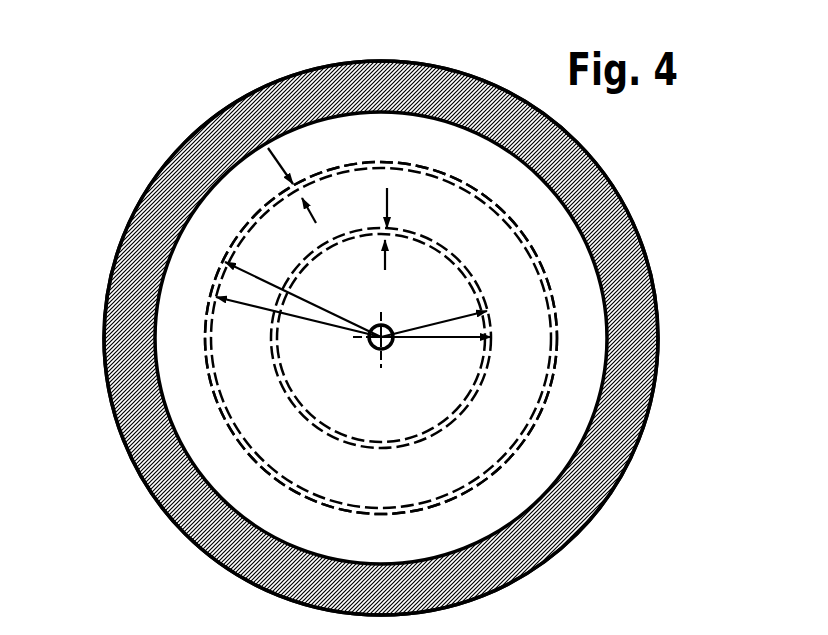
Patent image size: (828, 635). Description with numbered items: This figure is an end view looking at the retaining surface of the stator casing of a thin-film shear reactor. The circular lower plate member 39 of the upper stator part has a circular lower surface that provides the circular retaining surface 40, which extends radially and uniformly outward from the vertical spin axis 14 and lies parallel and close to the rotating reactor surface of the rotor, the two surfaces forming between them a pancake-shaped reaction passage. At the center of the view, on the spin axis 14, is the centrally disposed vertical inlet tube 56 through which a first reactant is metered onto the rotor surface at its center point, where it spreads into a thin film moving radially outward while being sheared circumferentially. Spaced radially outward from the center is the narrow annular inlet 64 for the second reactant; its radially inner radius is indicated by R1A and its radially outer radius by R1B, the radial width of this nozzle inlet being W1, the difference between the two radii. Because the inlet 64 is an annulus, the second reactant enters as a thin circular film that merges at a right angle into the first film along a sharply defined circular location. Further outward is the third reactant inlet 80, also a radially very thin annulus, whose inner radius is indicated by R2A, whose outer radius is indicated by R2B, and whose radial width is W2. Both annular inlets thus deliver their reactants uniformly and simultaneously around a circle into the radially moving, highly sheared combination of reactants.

The vertical spin axis 14 is at (370, 355).
The circular lower plate member 39 is at (583, 495).
The circular retaining surface 40 is at (457, 227).
The centrally disposed vertical inlet tube 56 is at (371, 352).
The narrow annular inlet 64 is at (365, 446).
The third reactant inlet 80 is at (530, 432).
The radially inner radius of the second reactant inlet R1A is at (433, 335).
The radially outer radius of the second reactant inlet R1B is at (433, 335).
The radially inner radius of the third reactant inlet R2A is at (327, 310).
The radially outer radius of the third reactant inlet R2B is at (327, 310).
The radial width of the second reactant nozzle inlet W1 is at (378, 230).
The radial width of the third reactant nozzle inlet W2 is at (300, 188).